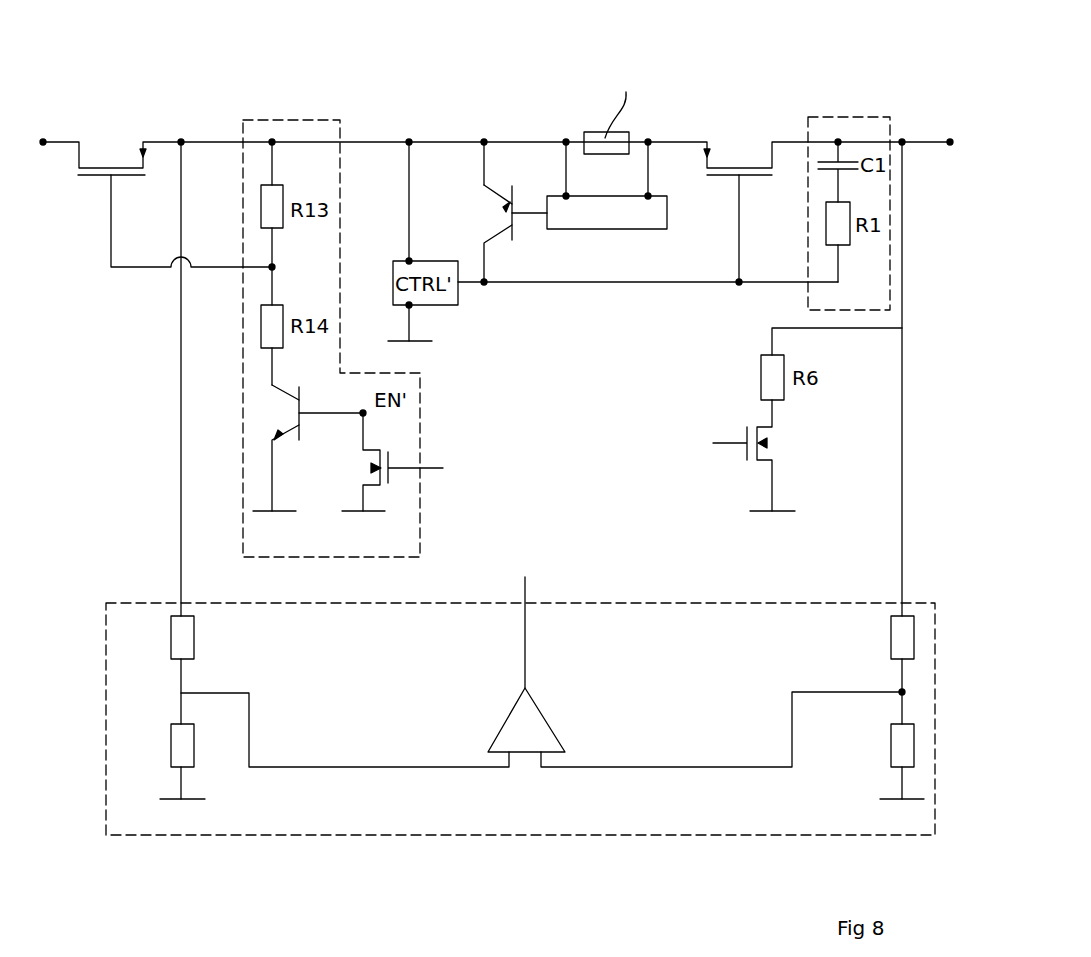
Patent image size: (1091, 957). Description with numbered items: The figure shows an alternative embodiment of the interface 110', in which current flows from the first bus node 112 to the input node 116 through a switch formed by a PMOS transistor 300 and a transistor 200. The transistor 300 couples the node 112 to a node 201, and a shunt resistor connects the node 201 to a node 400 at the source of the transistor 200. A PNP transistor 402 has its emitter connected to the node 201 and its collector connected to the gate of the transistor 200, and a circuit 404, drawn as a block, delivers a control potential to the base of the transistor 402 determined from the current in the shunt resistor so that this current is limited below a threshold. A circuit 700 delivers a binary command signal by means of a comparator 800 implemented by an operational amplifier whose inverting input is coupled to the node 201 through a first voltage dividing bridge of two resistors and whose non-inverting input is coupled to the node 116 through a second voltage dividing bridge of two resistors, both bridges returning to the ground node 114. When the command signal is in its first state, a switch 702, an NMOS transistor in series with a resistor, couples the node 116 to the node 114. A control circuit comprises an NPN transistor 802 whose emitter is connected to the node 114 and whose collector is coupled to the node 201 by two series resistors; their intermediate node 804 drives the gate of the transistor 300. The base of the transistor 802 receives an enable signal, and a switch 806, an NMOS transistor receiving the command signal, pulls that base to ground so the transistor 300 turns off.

The interface 110' is at (496, 89).
The node 112 is at (43, 148).
The node 116 is at (949, 150).
The PMOS transistor 300 is at (113, 158).
The transistor 200 is at (738, 158).
The node 201 is at (484, 138).
The node 400 is at (648, 140).
The PNP transistor 402 is at (498, 214).
The circuit 404 is at (628, 225).
The node 804 is at (275, 267).
The NPN transistor 802 is at (280, 410).
The switch 806 is at (372, 468).
The node 114 is at (412, 338).
The switch 702 is at (770, 442).
The circuit 700 is at (923, 600).
The comparator 800 is at (550, 715).